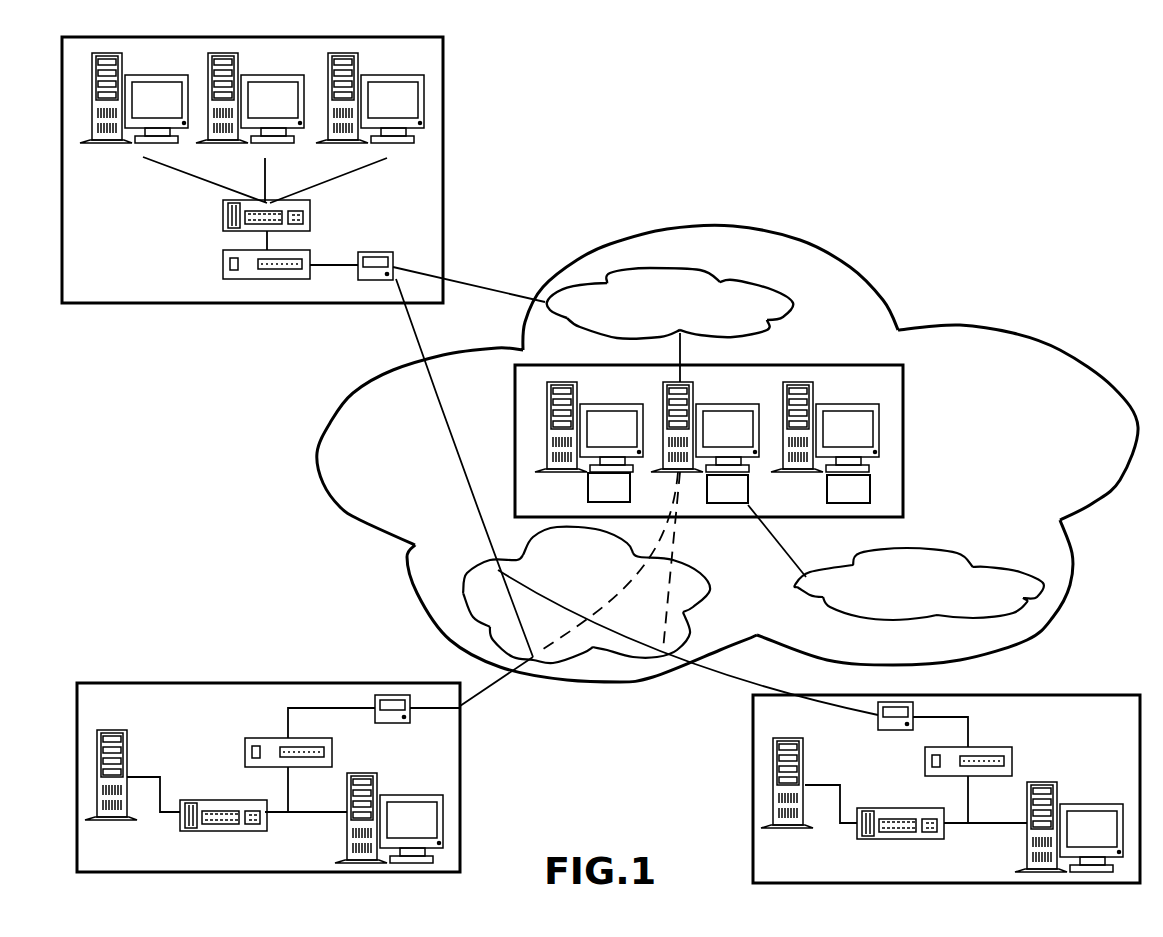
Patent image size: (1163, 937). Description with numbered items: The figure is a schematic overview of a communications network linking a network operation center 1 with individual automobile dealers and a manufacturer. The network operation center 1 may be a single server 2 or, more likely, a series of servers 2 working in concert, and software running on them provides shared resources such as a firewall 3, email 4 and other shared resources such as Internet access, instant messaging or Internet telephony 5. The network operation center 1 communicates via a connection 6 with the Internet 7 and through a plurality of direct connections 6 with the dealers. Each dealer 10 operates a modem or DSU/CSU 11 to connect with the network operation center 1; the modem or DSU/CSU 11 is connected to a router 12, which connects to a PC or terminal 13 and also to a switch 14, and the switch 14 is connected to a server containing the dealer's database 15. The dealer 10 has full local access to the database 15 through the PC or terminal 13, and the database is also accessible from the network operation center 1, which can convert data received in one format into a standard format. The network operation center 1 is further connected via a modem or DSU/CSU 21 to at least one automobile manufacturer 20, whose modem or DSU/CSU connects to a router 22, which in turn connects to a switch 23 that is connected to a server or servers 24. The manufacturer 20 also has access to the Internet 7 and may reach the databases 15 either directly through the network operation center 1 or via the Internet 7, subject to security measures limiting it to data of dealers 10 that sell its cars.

The network operation center 1 is at (905, 405).
The server 2 is at (613, 405).
The firewall 3 is at (609, 488).
The email 4 is at (727, 490).
The Internet telephony 5 is at (848, 490).
The connection 6 is at (480, 282).
The Internet 7 is at (655, 314).
The dealer 10 is at (333, 683).
The modem or DSU/CSU 11 is at (392, 727).
The router 12 is at (262, 738).
The PC or terminal 13 is at (415, 795).
The switch 14 is at (178, 824).
The dealer's database 15 is at (128, 752).
The automobile manufacturer 20 is at (230, 305).
The modem or DSU/CSU 21 is at (372, 252).
The router 22 is at (223, 258).
The switch 23 is at (223, 208).
The server 24 is at (160, 76).